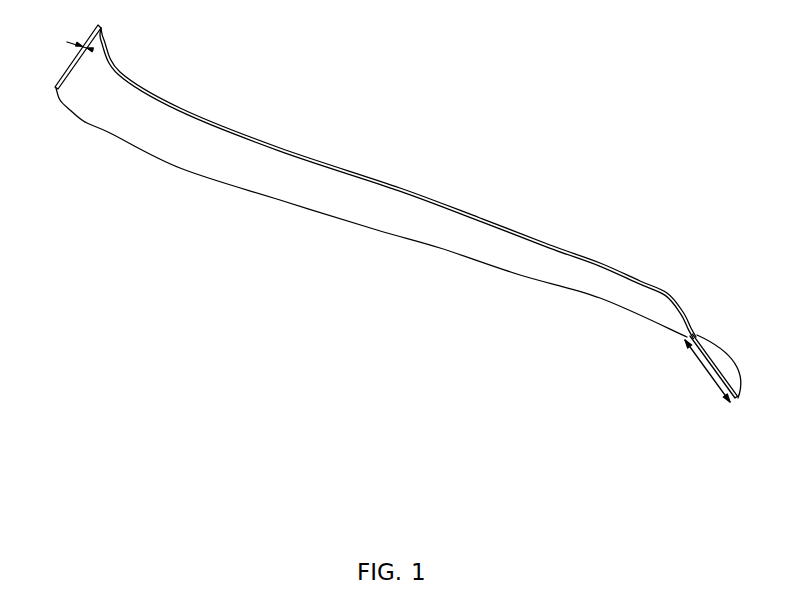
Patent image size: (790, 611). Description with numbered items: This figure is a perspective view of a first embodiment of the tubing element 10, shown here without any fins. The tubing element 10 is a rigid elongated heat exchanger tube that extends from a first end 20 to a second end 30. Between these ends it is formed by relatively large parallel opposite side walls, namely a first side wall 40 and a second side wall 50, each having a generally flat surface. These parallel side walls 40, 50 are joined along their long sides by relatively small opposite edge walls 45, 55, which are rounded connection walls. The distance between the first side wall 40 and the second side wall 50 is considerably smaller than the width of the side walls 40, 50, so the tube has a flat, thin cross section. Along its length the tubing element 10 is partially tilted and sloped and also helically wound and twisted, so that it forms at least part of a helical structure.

The tubing element 10 is at (419, 112).
The first end 20 is at (63, 73).
The second end 30 is at (718, 370).
The first side wall 40 is at (110, 122).
The edge wall 45 is at (458, 212).
The second side wall 50 is at (705, 343).
The edge wall 55 is at (67, 108).